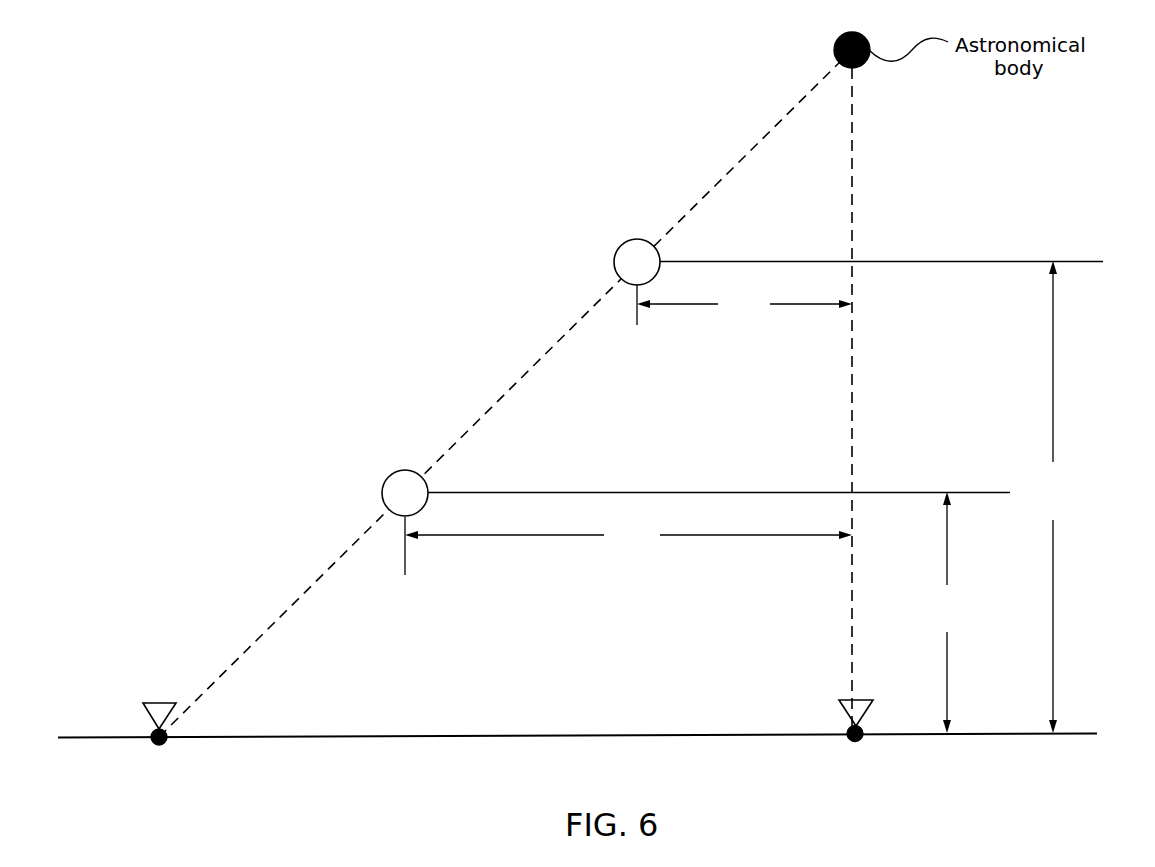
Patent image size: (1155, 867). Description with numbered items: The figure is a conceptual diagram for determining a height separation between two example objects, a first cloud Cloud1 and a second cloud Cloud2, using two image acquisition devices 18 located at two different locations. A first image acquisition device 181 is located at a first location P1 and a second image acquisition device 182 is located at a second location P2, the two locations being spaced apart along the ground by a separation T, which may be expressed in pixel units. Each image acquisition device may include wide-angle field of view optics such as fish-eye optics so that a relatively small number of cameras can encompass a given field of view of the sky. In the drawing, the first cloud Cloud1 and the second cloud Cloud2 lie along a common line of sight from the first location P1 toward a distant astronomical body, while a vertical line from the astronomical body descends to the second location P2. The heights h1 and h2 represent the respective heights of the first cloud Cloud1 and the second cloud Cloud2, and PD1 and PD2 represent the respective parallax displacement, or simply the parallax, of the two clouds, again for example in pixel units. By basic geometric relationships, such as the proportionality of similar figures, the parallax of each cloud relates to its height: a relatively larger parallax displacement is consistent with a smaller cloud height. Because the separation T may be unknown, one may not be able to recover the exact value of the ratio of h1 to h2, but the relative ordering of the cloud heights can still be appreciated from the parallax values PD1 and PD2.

The image acquisition device 18 is at (475, 702).
The first image acquisition device 181 is at (148, 718).
The second image acquisition device 182 is at (839, 715).
The first location P1 is at (160, 745).
The second location P2 is at (856, 742).
The separation between image acquisition devices T is at (577, 755).
The cloud1 Cloud1 is at (382, 488).
The cloud2 Cloud2 is at (614, 270).
The parallax displacement of cloud1 PD1 is at (628, 536).
The parallax displacement of cloud2 PD2 is at (744, 305).
The height of cloud1 h1 is at (945, 612).
The height of cloud2 h2 is at (1049, 497).